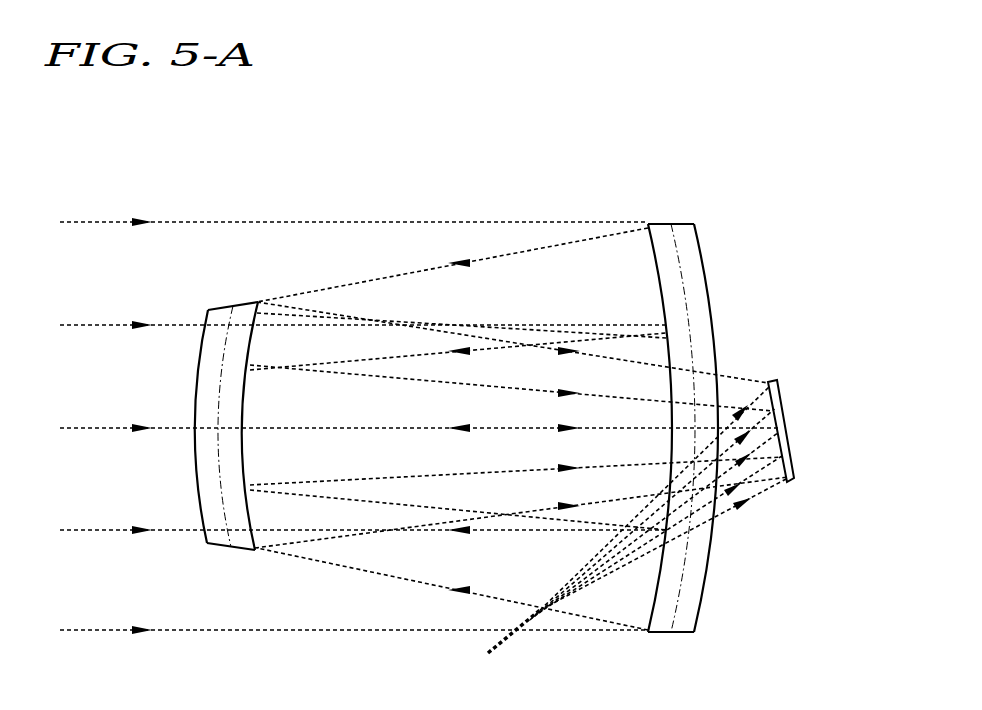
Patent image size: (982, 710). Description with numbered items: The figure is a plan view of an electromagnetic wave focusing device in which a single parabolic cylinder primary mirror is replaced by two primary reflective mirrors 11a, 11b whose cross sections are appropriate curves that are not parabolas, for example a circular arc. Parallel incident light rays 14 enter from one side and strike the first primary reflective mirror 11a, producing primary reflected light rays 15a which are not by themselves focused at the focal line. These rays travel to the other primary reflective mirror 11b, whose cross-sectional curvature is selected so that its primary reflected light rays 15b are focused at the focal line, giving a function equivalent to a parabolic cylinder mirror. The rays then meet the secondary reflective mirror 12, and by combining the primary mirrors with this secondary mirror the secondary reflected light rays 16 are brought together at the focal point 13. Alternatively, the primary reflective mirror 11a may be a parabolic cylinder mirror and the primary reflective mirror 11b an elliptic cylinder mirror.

The primary reflective mirror 11a is at (695, 268).
The primary reflective mirror 11b is at (215, 332).
The secondary reflective mirror 12 is at (775, 390).
The focal point 13 is at (488, 655).
The incident light rays 14 is at (243, 220).
The primary reflected light rays 15a is at (512, 255).
The primary reflected light rays 15b is at (603, 358).
The secondary reflected light rays 16 is at (767, 498).